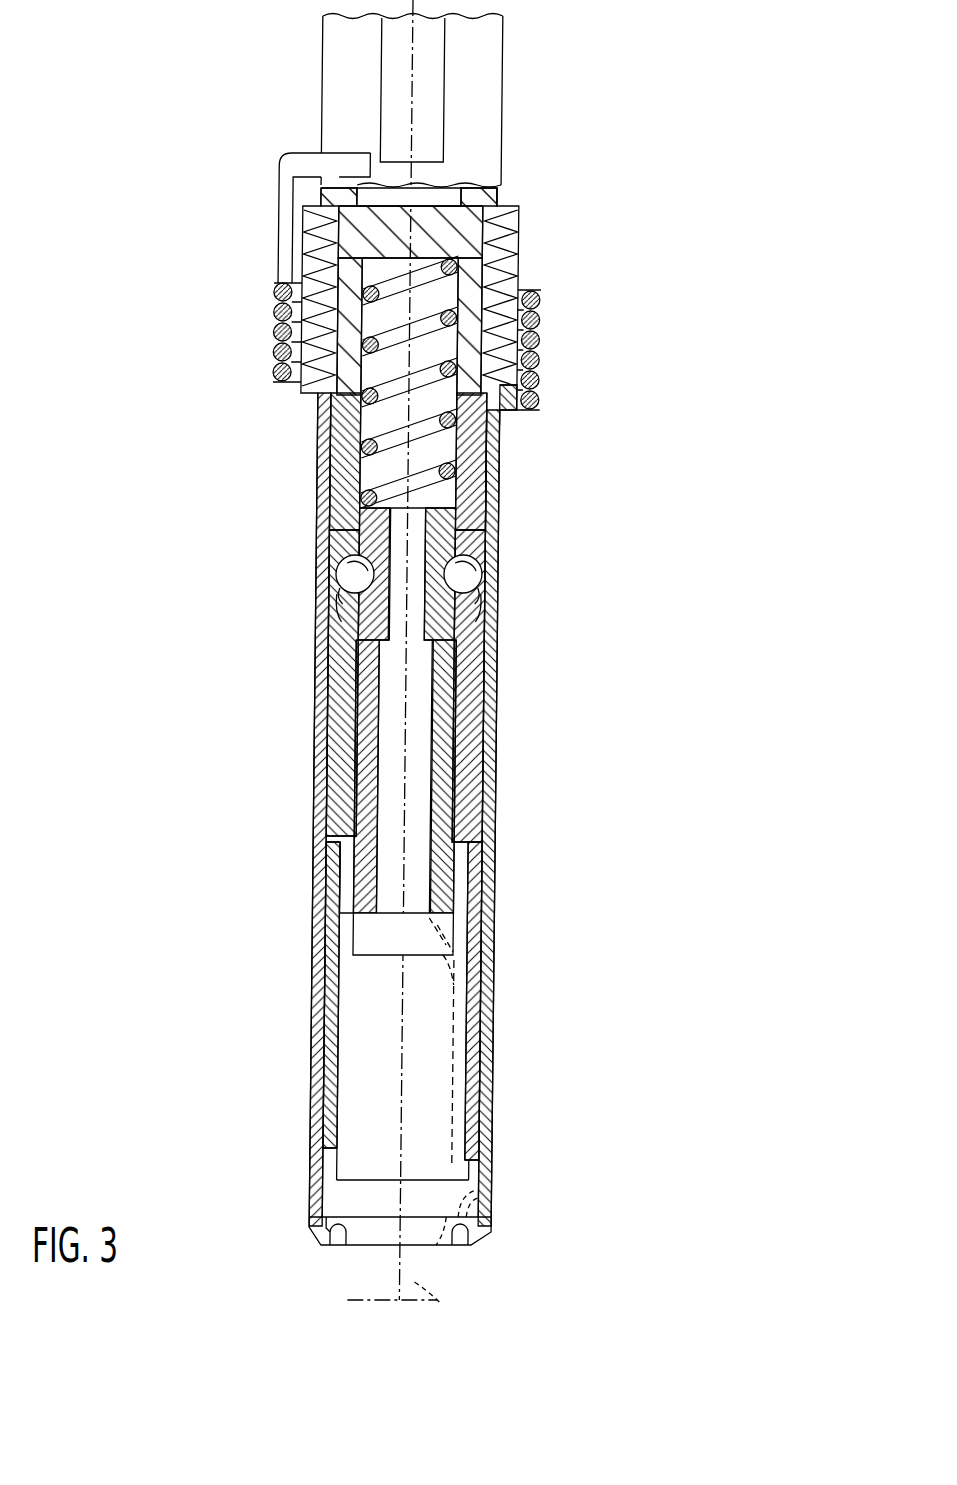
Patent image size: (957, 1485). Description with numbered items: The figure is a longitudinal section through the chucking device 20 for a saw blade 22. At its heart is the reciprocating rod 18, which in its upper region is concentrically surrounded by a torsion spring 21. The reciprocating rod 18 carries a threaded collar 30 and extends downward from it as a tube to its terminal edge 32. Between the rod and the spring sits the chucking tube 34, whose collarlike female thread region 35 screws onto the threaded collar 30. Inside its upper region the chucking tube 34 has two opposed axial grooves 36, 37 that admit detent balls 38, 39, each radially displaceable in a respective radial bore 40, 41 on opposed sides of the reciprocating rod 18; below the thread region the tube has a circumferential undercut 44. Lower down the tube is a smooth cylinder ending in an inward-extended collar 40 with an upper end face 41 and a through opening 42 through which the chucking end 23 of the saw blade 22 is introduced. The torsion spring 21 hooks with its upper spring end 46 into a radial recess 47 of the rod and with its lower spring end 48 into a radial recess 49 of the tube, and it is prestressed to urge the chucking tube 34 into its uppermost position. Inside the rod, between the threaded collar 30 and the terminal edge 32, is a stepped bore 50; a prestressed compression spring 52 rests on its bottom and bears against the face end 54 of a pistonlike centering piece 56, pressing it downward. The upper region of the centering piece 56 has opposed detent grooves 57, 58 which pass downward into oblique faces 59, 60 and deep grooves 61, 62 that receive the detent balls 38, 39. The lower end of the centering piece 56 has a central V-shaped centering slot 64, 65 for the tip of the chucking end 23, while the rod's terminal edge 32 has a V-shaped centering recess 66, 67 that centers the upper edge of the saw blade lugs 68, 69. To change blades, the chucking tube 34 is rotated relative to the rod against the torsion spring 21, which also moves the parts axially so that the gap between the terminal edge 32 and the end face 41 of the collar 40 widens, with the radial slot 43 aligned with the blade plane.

The reciprocating rod 18 is at (501, 97).
The chucking device 20 is at (264, 513).
The torsion spring 21 is at (545, 320).
The saw blade 22 is at (480, 1312).
The chucking end 23 is at (478, 976).
The threaded collar 30 is at (506, 252).
The terminal edge 32 is at (352, 1188).
The chucking tube 34 is at (325, 813).
The female thread region 35 is at (536, 298).
The axial groove 36 is at (504, 471).
The axial groove 37 is at (338, 473).
The detent ball 38 is at (484, 630).
The detent ball 39 is at (343, 608).
The radial bore 40 is at (486, 598).
The radial bore 41 is at (349, 592).
The through opening 42 is at (457, 1248).
The radial slot 43 is at (480, 1248).
The undercut 44 is at (545, 361).
The upper spring end 46 is at (284, 172).
The radial recess 47 is at (333, 152).
The lower spring end 48 is at (536, 401).
The radial recess 49 is at (511, 412).
The stepped bore 50 is at (352, 1006).
The compression spring 52 is at (390, 286).
The face end 54 is at (441, 499).
The centering piece 56 is at (447, 753).
The detent groove 57 is at (450, 553).
The detent groove 58 is at (364, 531).
The oblique face 59 is at (490, 576).
The oblique face 60 is at (342, 578).
The deep groove 61 is at (475, 656).
The deep groove 62 is at (343, 651).
The centering slot 64 is at (461, 936).
The centering slot 65 is at (365, 929).
The centering recess 66 is at (336, 1149).
The centering recess 67 is at (481, 1159).
The saw blade lug 68 is at (502, 1193).
The saw blade lug 69 is at (472, 1207).